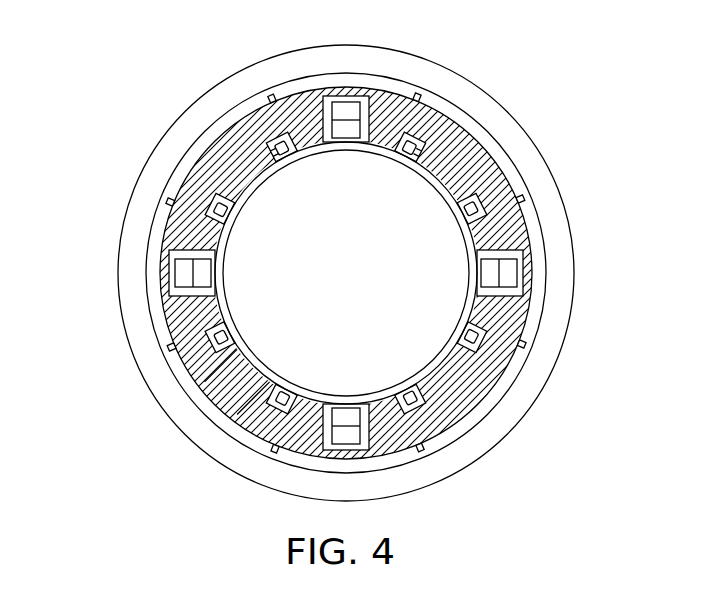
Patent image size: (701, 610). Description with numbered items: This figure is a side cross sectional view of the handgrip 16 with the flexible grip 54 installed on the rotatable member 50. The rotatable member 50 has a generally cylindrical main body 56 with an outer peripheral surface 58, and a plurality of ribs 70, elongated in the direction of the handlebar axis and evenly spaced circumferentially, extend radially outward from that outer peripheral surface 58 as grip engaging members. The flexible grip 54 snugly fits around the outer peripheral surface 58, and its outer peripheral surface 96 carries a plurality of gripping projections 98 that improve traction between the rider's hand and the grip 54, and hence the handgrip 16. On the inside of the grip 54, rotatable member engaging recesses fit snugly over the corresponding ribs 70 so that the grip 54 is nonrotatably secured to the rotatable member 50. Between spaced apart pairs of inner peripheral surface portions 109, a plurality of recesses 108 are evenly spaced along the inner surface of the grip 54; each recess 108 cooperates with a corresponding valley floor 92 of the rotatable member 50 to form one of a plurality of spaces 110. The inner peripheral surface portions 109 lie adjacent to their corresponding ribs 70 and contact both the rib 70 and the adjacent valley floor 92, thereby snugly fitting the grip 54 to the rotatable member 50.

The handgrip 16 is at (108, 60).
The rotatable member 50 is at (512, 428).
The flexible grip 54 is at (197, 200).
The main body 56 is at (462, 322).
The outer peripheral surface 58 is at (488, 211).
The ribs 70 is at (235, 385).
The valley floor 92 is at (290, 165).
The outer peripheral surface 96 is at (447, 162).
The gripping projections 98 is at (518, 337).
The recesses 108 is at (290, 135).
The inner peripheral surface portions 109 is at (283, 382).
The spaces 110 is at (345, 148).